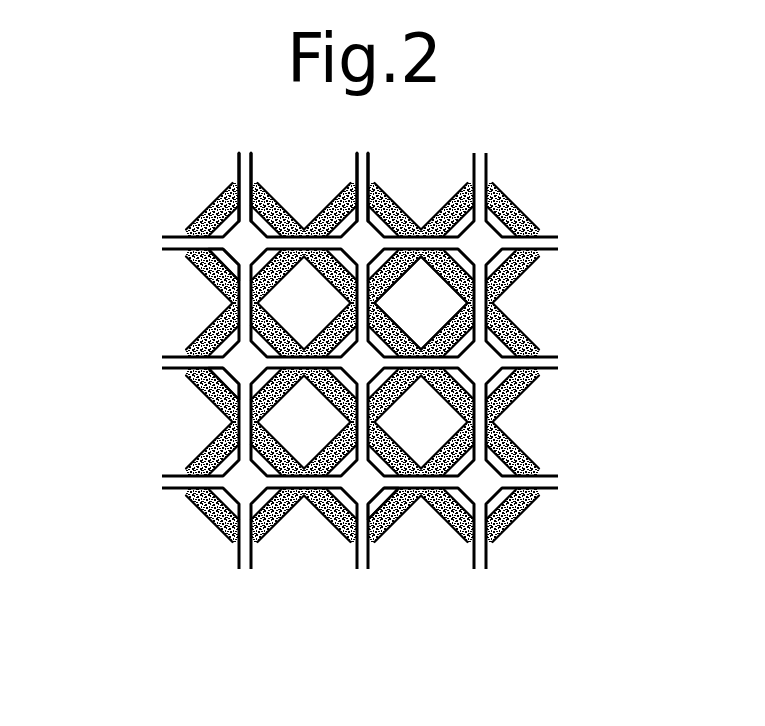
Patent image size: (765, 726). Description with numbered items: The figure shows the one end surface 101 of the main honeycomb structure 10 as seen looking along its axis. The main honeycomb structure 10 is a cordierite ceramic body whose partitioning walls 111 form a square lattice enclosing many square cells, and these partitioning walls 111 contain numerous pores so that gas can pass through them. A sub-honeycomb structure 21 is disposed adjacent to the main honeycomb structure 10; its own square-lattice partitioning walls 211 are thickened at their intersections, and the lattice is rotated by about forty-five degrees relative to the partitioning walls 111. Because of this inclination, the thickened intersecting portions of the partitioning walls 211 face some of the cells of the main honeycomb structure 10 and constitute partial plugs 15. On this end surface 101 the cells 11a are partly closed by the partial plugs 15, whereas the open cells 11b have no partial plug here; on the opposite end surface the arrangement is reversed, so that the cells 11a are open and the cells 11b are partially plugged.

The main honeycomb structure 10 is at (507, 203).
The one end surface 101 is at (176, 523).
The cell having partial plug 11a is at (518, 213).
The open cell 11b is at (440, 302).
The partial plug 15 is at (243, 250).
The sub-honeycomb structure 21 is at (242, 168).
The partitioning wall 211 is at (361, 166).
The partitioning wall 111 is at (527, 386).